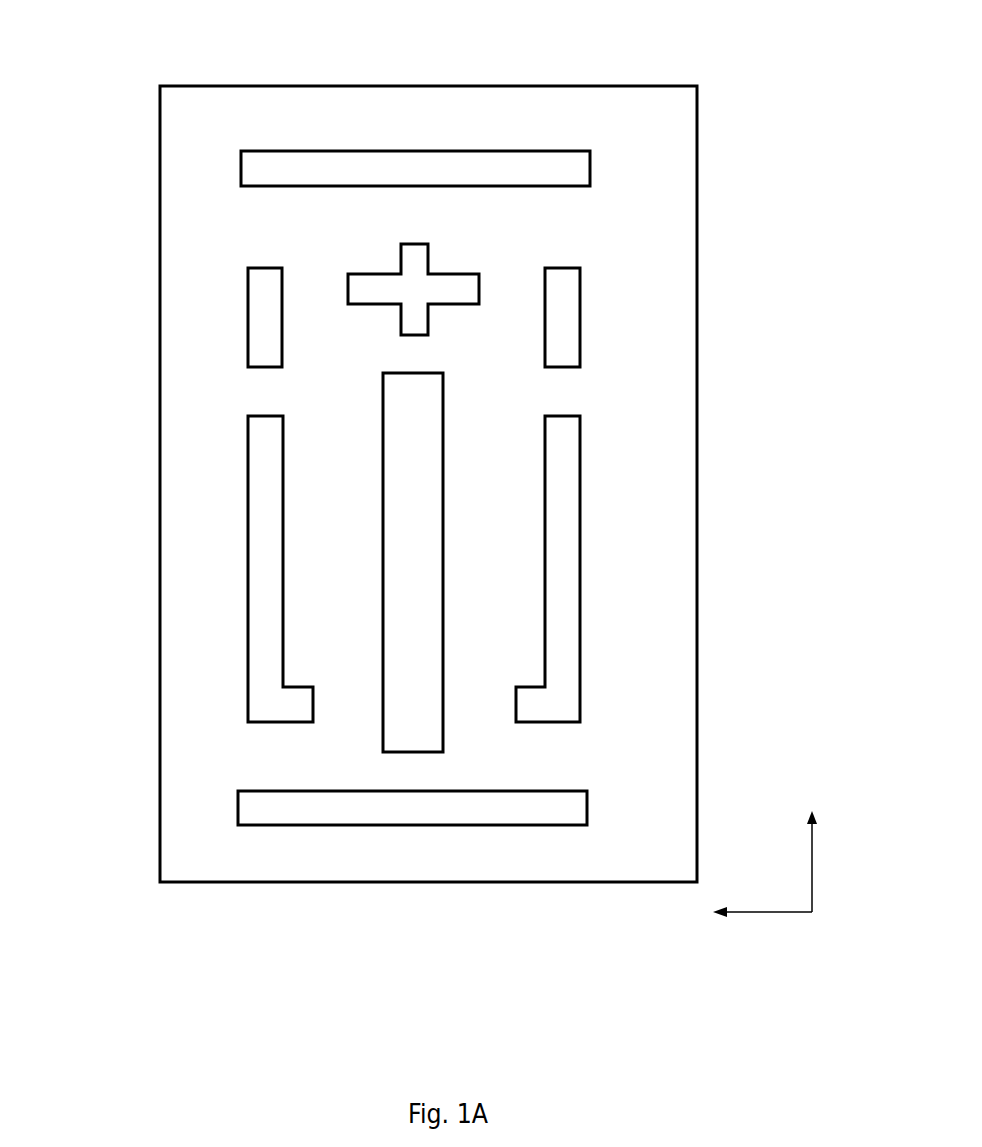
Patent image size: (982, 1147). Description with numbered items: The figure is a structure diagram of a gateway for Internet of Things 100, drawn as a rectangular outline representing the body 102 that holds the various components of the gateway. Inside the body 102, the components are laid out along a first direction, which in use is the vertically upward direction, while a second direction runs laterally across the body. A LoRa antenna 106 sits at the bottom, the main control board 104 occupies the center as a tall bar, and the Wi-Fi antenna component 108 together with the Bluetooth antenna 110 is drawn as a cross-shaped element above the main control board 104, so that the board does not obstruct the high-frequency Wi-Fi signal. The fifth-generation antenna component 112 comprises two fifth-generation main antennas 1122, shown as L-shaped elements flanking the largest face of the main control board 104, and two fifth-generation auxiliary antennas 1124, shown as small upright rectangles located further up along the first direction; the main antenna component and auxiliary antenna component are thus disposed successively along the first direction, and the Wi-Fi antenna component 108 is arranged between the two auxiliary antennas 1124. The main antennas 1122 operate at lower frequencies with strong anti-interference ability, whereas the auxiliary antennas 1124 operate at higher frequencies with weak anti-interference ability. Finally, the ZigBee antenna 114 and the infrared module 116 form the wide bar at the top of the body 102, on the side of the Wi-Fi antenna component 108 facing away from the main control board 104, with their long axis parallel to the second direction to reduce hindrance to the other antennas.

The gateway for Internet of Things 100 is at (461, 505).
The body 102 is at (663, 185).
The main control board 104 is at (410, 637).
The LoRa antenna 106 is at (555, 807).
The Wi-Fi antenna component 108 is at (272, 230).
The Bluetooth antenna 110 is at (360, 290).
The 5G antenna component 112 is at (551, 473).
The 5G main antennas 1122 is at (565, 426).
The 5G auxiliary antennas 1124 is at (561, 353).
The ZigBee antenna 114 is at (527, 106).
The infrared module 116 is at (557, 167).